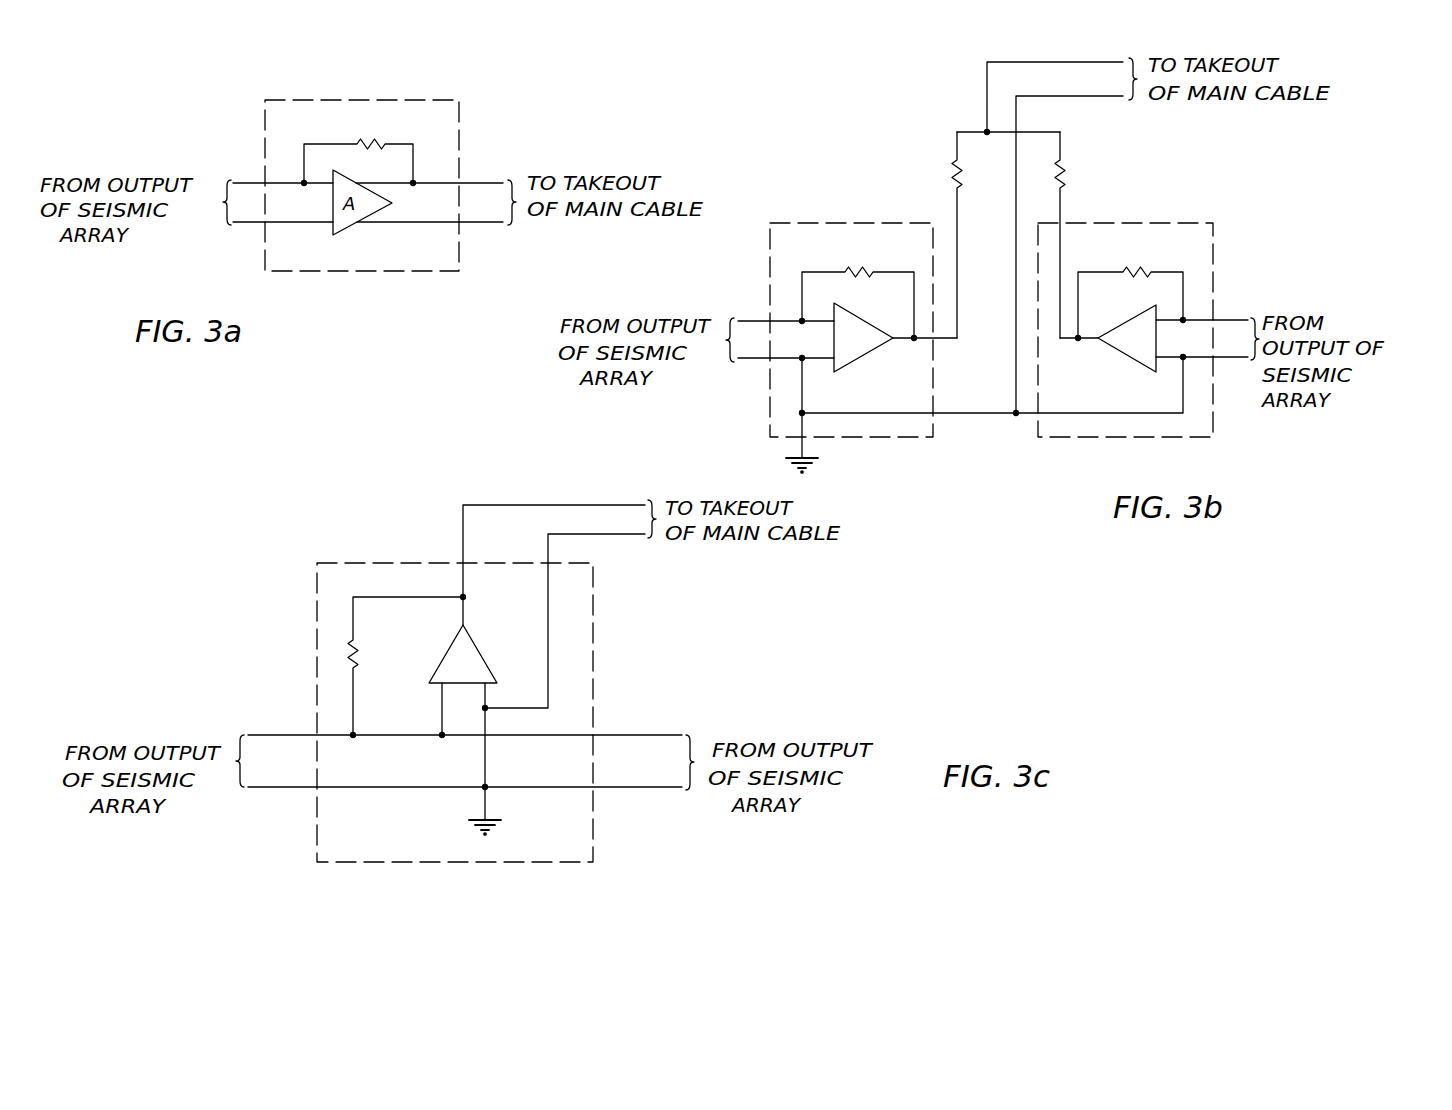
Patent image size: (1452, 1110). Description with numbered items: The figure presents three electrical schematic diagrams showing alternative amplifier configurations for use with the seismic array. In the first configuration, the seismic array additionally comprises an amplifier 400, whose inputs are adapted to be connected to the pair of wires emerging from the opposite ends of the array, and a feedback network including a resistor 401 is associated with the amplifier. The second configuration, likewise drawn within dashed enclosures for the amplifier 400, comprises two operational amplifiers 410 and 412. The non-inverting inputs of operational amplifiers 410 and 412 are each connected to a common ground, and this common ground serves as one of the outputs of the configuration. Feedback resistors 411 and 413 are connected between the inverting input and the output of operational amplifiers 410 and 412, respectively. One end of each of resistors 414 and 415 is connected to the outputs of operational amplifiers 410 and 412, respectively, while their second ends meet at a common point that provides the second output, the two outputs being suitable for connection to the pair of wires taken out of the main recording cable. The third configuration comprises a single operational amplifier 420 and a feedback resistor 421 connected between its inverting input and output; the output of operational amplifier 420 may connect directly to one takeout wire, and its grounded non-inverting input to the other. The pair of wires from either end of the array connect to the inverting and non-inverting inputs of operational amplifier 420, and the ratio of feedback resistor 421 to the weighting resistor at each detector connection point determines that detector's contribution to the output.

In FIG. 3A, the amplifier 400 is at (409, 100).
In FIG. 3B, the amplifier 400 is at (812, 223).
In FIG. 3C, the amplifier 400 is at (358, 563).
In FIG. 3A, the resistor 401 is at (382, 140).
In FIG. 3B, the operational amplifier 410 is at (862, 355).
In FIG. 3B, the feedback resistor 411 is at (853, 268).
In FIG. 3B, the operational amplifier 412 is at (1118, 350).
In FIG. 3B, the feedback resistor 413 is at (1137, 268).
In FIG. 3B, the resistor 414 is at (955, 165).
In FIG. 3B, the resistor 415 is at (1066, 170).
In FIG. 3C, the operational amplifier 420 is at (480, 648).
In FIG. 3C, the feedback resistor 421 is at (360, 656).